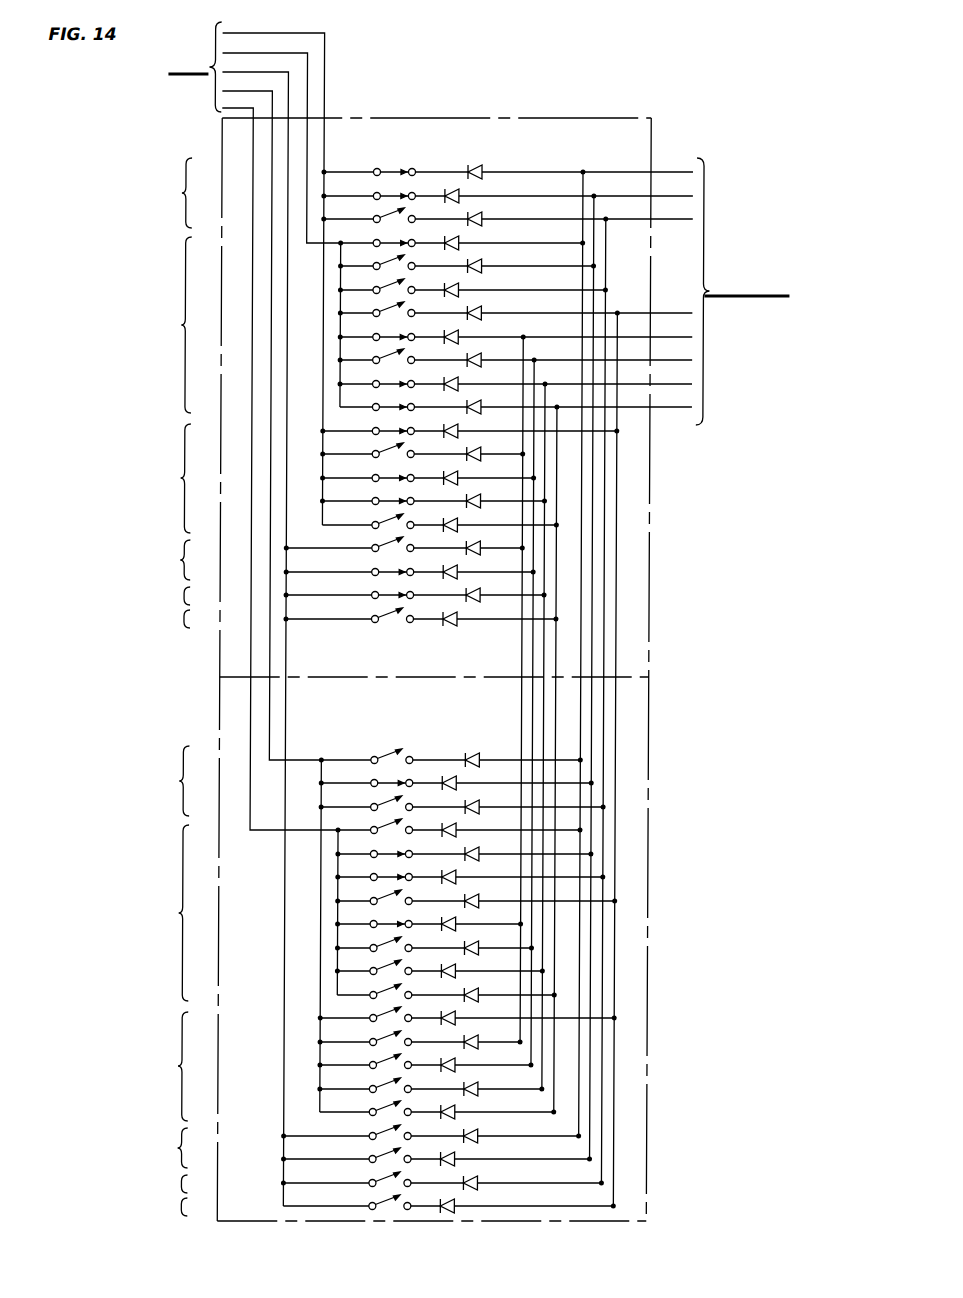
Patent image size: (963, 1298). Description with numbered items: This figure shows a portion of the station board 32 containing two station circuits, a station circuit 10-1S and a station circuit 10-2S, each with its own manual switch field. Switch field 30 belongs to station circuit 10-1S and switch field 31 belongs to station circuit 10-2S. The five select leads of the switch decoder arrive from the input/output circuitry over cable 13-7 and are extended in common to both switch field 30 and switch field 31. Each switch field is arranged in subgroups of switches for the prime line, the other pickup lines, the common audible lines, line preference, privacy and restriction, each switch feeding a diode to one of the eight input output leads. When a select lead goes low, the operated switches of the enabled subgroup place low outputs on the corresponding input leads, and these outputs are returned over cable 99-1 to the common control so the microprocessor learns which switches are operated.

The station board 32 is at (526, 626).
The switch field 30 is at (376, 385).
The switch field 31 is at (337, 969).
The station circuit 10-1S is at (434, 669).
The station circuit 10-2S is at (432, 949).
The cable 13-7 is at (190, 68).
The cable 99-1 is at (722, 303).